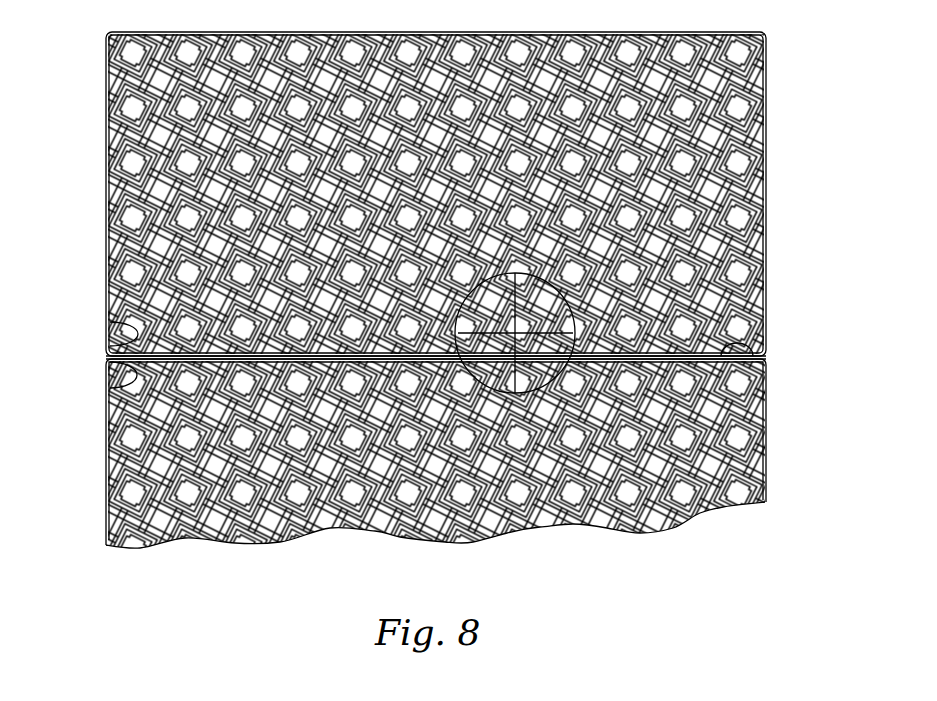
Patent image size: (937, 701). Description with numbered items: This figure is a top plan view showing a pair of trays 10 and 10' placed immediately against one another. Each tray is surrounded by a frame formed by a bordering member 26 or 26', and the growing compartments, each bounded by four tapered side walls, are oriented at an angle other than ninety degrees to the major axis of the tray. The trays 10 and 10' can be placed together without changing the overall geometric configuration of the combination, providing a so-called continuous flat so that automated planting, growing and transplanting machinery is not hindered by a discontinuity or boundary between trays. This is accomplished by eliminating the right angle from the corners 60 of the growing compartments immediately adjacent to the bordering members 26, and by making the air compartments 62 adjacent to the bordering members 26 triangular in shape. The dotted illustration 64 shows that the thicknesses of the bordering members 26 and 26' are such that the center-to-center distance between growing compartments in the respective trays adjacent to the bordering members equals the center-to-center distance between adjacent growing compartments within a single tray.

The tray 10 is at (468, 350).
The tray 10' is at (468, 350).
The bordering member 26 is at (91, 325).
The bordering member 26' is at (86, 389).
The corners of the growing compartments 60 is at (107, 352).
The air compartments 62 is at (754, 352).
The dotted illustration 64 is at (556, 374).